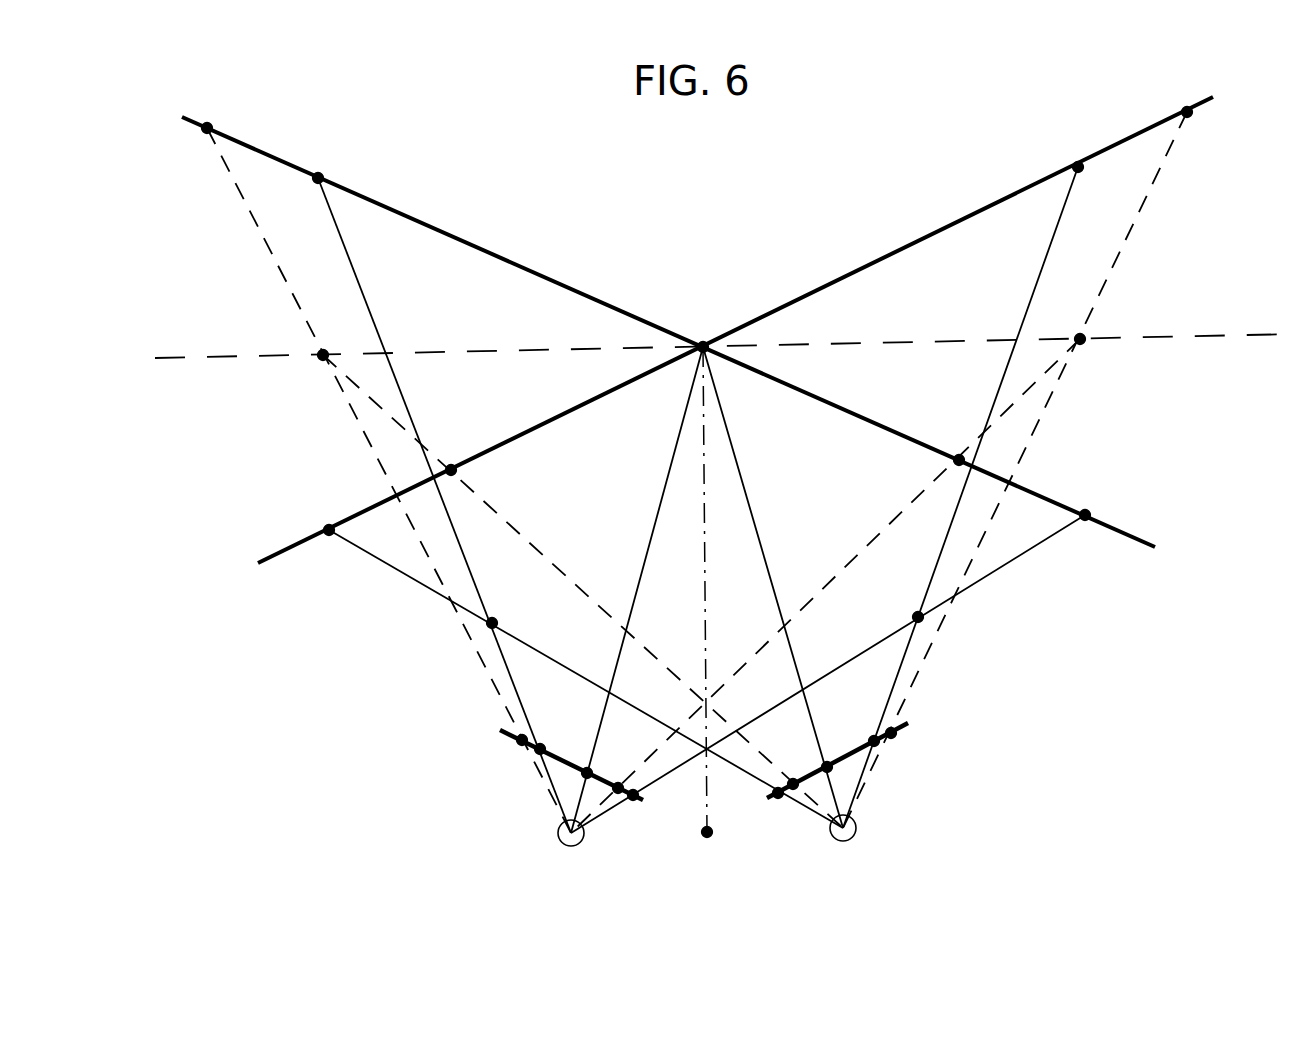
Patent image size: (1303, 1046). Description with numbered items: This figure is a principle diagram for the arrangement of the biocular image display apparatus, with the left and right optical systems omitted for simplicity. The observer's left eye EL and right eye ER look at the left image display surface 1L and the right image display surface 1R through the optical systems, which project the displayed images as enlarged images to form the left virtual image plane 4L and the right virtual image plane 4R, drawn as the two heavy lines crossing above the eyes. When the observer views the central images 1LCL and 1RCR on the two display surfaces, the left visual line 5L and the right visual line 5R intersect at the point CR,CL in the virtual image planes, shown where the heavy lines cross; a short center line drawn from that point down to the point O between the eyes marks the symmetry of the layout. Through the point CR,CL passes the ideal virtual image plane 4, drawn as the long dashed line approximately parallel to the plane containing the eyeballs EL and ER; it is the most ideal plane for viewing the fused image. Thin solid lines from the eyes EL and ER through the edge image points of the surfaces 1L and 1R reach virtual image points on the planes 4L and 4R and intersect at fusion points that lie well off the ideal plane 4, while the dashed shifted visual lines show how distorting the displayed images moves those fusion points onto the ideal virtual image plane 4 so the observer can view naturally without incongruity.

The ideal virtual image plane 4 is at (1238, 334).
The left virtual image plane 4L is at (440, 230).
The right virtual image plane 4R is at (920, 240).
The left visual line 5L is at (637, 590).
The right visual line 5R is at (761, 545).
The left image display surface 1L is at (503, 732).
The right image display surface 1R is at (905, 725).
The central image on left display surface 1LCL is at (587, 773).
The central image on right display surface 1RCR is at (827, 767).
The left eye EL is at (558, 838).
The right eye ER is at (857, 830).
The origin / midpoint between eyes O is at (706, 834).
The intersection point of central visual lines CR,CL is at (703, 345).